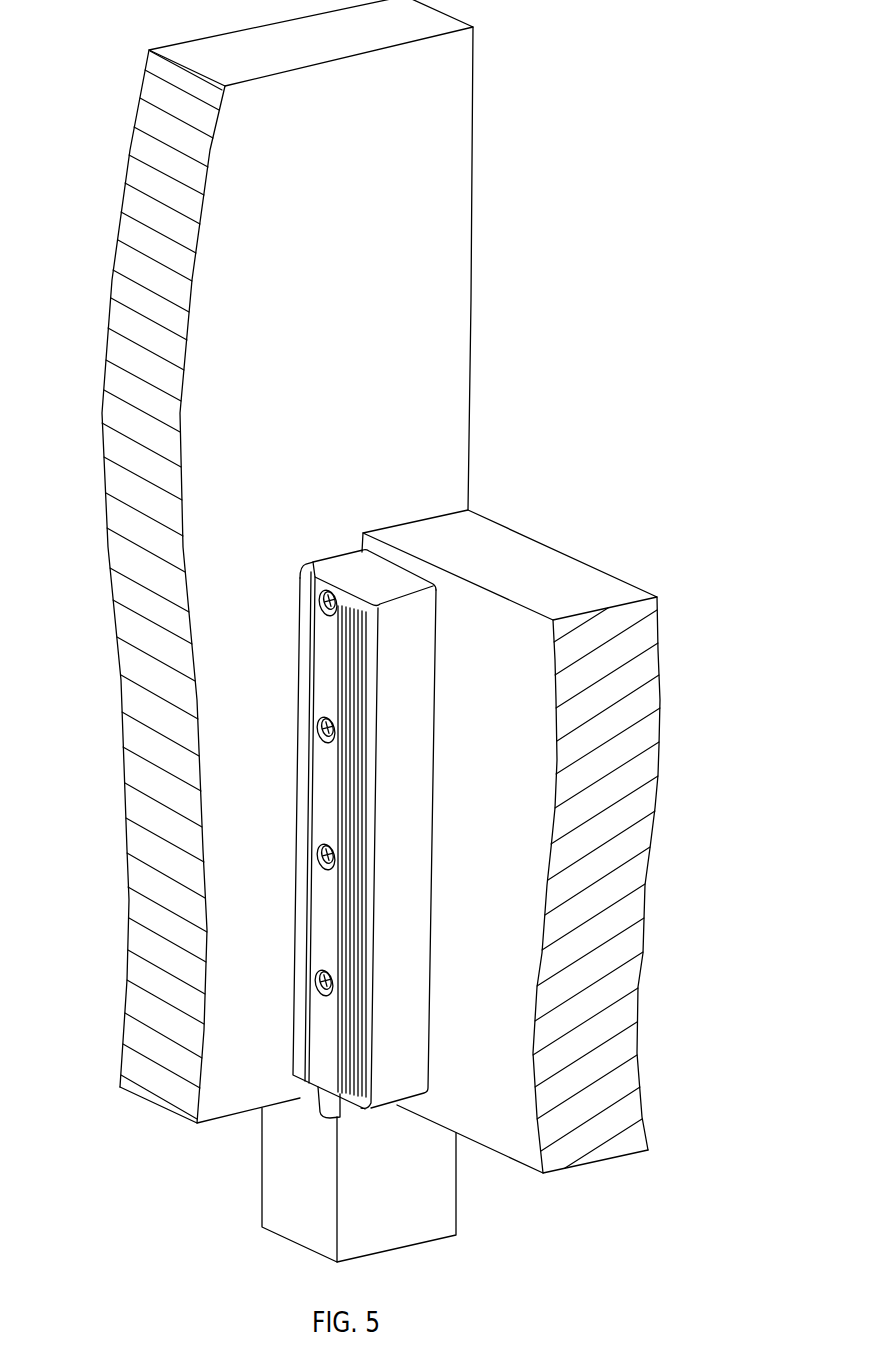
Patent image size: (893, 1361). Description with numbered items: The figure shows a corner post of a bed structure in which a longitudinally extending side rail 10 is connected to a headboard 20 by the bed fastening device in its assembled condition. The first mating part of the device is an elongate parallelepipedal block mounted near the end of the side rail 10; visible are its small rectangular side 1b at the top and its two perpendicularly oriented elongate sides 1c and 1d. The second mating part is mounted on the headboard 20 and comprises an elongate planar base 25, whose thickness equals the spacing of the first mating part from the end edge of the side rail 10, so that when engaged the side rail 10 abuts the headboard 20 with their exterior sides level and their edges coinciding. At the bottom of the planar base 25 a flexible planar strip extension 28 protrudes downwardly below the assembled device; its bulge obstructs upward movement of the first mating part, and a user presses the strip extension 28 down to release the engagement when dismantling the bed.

The headboard 20 is at (497, 208).
The side rail 10 is at (590, 525).
The small rectangular side 1b is at (372, 578).
The elongate side 1c is at (349, 858).
The elongate side 1d is at (412, 945).
The planar base 25 is at (323, 565).
The flexible planar strip extension 28 is at (320, 1095).